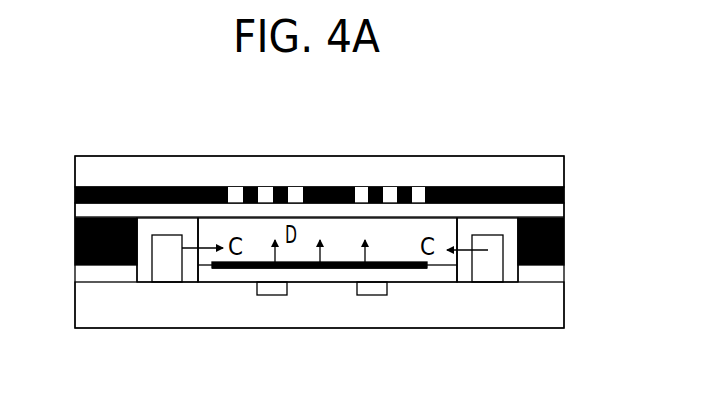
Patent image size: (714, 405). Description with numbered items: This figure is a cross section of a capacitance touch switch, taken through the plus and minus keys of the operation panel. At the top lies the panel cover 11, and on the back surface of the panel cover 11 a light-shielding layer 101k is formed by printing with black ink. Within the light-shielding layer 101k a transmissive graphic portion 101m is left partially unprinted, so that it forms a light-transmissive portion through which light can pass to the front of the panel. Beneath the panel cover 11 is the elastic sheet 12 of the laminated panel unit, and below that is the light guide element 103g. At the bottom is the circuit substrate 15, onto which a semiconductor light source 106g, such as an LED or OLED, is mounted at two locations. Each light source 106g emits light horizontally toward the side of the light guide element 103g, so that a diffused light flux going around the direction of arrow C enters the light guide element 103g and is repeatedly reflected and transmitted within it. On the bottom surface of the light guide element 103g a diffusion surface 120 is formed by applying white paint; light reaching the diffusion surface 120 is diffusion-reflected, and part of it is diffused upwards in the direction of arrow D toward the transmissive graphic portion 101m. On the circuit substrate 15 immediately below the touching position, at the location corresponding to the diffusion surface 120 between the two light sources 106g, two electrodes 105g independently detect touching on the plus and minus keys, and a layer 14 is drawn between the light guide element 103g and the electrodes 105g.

The panel cover 11 is at (83, 173).
The elastic sheet 12 is at (82, 213).
The movable electrode / membrane 14 is at (238, 272).
The circuit substrate 15 is at (130, 307).
The light-shielding layer 101k is at (565, 197).
The transmissive graphic portion 101m is at (263, 187).
The light guide element 103g is at (430, 232).
The electrodes 105g is at (372, 295).
The light source 106g is at (168, 257).
The diffusion surface 120 is at (395, 270).